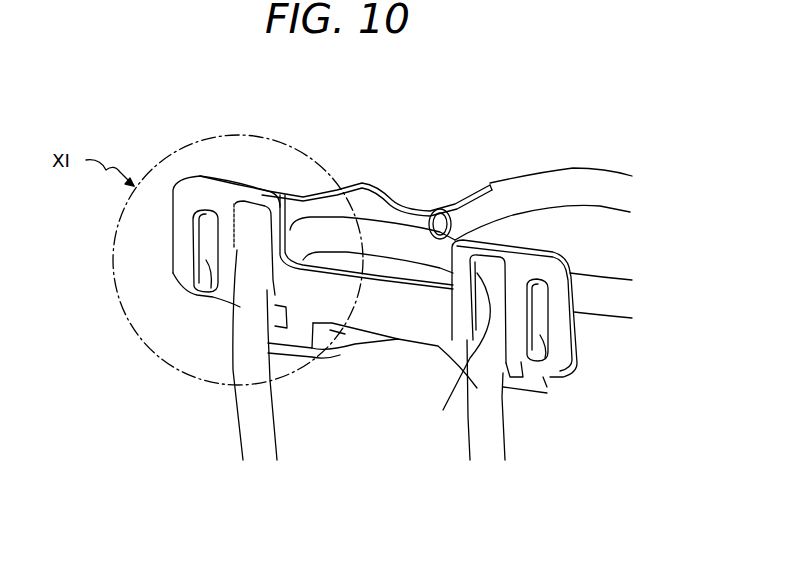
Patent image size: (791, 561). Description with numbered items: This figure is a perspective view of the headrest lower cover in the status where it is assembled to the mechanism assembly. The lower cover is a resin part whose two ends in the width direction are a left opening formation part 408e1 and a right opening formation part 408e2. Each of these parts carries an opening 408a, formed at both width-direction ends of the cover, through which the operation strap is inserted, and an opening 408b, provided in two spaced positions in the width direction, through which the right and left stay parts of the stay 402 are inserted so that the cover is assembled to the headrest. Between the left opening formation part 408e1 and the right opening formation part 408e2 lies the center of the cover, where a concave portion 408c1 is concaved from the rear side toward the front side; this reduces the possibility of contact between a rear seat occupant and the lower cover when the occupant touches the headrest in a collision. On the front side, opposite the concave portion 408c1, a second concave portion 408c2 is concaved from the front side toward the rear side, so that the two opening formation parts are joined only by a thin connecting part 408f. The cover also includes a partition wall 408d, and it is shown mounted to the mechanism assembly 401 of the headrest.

The duct 401 is at (572, 168).
The pipe 402 is at (507, 437).
The opening 408a is at (197, 293).
The opening 408b is at (275, 352).
The concave portion 408c1 is at (381, 290).
The concave portion 408c2 is at (398, 340).
The partition wall 408d is at (258, 235).
The left opening formation part 408e1 is at (225, 183).
The right opening formation part 408e2 is at (563, 258).
The thin connecting part 408f is at (427, 315).